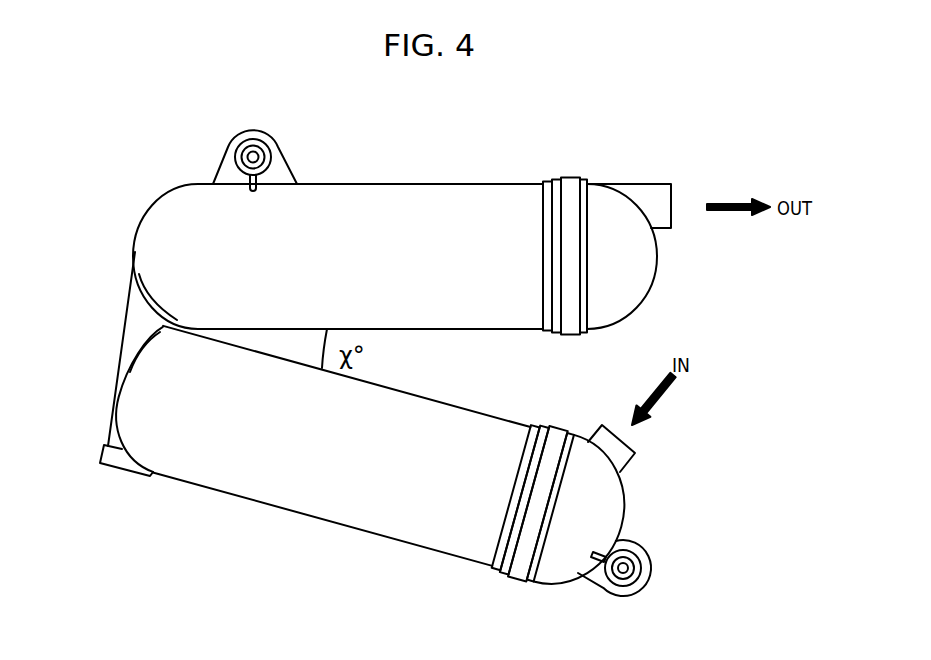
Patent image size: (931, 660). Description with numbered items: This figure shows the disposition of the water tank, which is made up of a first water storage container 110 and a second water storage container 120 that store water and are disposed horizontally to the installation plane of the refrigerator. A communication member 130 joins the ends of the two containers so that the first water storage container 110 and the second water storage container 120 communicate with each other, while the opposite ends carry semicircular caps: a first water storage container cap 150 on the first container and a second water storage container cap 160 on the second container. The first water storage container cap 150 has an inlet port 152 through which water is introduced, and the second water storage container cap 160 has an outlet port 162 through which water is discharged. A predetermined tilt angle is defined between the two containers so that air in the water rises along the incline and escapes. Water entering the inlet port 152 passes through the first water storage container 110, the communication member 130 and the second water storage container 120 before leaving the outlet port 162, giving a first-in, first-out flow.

The first water storage container 110 is at (312, 505).
The second water storage container 120 is at (402, 192).
The communication member 130 is at (132, 325).
The first water storage container cap 150 is at (613, 513).
The inlet port 152 is at (625, 438).
The second water storage container cap 160 is at (645, 265).
The outlet port 162 is at (672, 206).